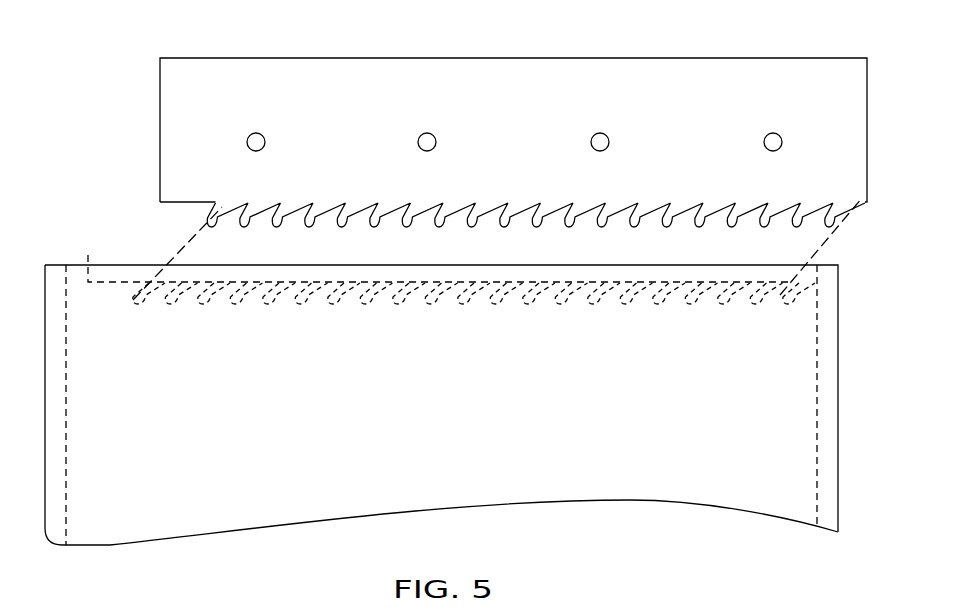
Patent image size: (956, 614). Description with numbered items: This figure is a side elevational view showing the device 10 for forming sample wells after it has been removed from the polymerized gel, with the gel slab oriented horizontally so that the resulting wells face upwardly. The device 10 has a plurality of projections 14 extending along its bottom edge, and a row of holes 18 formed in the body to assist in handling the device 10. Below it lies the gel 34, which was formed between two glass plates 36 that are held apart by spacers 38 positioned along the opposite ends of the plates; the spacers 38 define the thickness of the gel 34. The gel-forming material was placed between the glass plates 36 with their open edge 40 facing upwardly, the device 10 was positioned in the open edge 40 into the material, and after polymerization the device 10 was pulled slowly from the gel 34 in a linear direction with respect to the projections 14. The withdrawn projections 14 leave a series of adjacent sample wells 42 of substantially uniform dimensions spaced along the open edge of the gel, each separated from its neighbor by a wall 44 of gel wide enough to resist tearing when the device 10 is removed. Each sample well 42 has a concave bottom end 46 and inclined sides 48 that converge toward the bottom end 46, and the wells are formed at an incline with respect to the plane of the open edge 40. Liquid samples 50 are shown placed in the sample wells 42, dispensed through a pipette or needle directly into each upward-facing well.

The device for forming sample wells 10 is at (688, 47).
The projections 14 is at (212, 212).
The holes 18 is at (598, 135).
The gel 34 is at (838, 341).
The glass plates 36 is at (778, 508).
The spacers 38 is at (54, 285).
The open edge 40 is at (810, 264).
The sample wells 42 is at (350, 300).
The wall 44 is at (628, 280).
The concave bottom end 46 is at (590, 296).
The inclined sides 48 is at (405, 290).
The liquid samples 50 is at (290, 277).